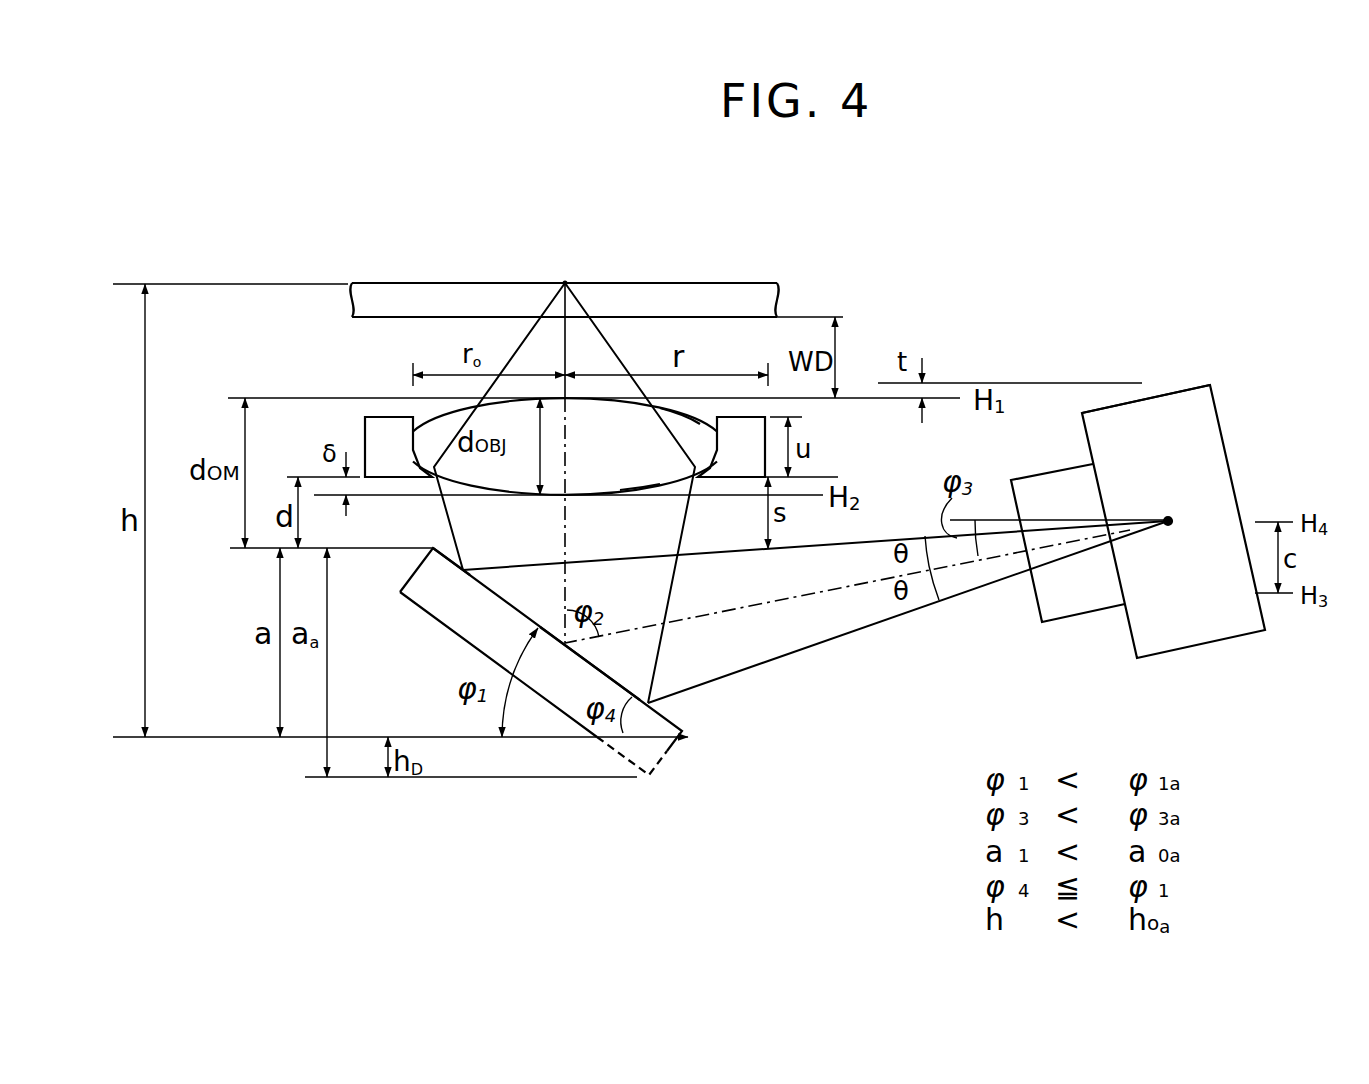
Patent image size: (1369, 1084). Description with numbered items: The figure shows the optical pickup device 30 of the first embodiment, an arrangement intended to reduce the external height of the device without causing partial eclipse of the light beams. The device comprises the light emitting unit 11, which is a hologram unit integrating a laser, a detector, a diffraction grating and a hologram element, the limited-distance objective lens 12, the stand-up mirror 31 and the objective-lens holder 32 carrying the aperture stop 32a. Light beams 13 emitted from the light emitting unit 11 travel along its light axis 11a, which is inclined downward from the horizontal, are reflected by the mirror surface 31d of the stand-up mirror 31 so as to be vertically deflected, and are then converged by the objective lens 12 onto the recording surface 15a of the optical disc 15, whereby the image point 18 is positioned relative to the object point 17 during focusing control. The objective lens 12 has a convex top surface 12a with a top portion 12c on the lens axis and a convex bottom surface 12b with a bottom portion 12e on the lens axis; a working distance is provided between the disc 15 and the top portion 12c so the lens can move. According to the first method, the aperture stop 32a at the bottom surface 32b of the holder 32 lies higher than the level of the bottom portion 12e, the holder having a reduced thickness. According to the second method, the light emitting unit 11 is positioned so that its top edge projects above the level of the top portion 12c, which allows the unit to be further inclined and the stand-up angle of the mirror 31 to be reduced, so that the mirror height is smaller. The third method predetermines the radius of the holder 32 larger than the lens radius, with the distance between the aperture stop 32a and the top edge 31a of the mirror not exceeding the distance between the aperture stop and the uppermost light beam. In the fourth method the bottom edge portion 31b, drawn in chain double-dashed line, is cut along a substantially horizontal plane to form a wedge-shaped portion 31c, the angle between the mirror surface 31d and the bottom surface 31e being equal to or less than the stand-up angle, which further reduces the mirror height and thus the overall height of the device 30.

The light emitting unit 11 is at (1232, 452).
The light axis of the light emitting unit 11a is at (1208, 385).
The limited-distance objective lens 12 is at (443, 412).
The convex top surface 12a is at (683, 412).
The convex bottom surface 12b is at (645, 486).
The top portion 12c is at (607, 334).
The bottom portion 12e is at (570, 497).
The light beams 13 is at (883, 623).
The optical disc 15 is at (712, 283).
The recording surface 15a is at (537, 283).
The object point 17 is at (1171, 528).
The image point 18 is at (565, 283).
The optical pickup device 30 is at (1082, 174).
The stand-up mirror 31 is at (455, 625).
The top edge of the stand-up mirror 31a is at (446, 530).
The bottom edge portion 31b is at (635, 763).
The wedge-shaped portion 31c is at (652, 723).
The mirror surface 31d is at (615, 683).
The bottom surface 31e is at (648, 738).
The objective-lens holder 32 is at (602, 409).
The aperture stop 32a is at (702, 477).
The bottom surface of the objective-lens holder 32b is at (388, 477).